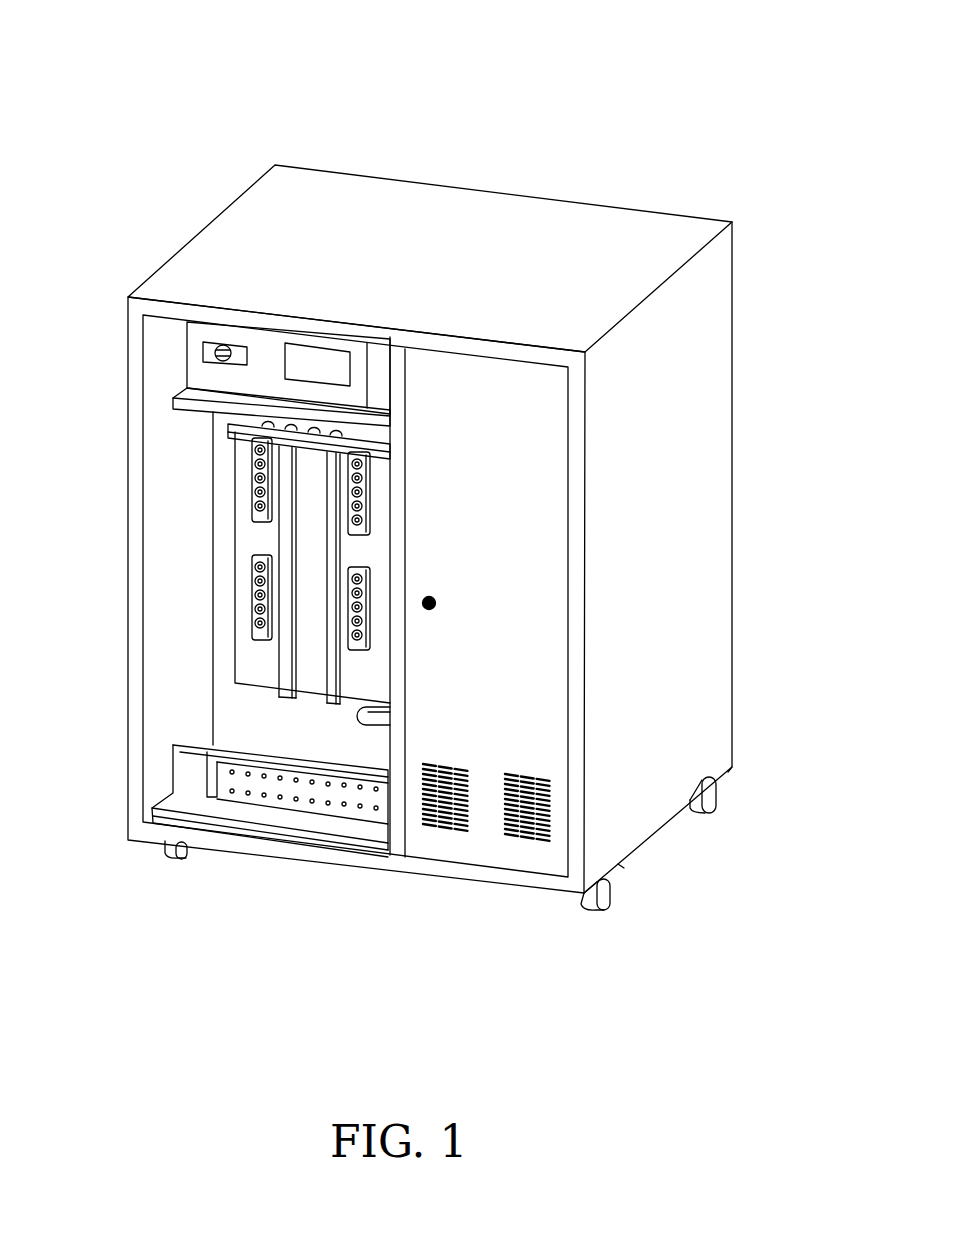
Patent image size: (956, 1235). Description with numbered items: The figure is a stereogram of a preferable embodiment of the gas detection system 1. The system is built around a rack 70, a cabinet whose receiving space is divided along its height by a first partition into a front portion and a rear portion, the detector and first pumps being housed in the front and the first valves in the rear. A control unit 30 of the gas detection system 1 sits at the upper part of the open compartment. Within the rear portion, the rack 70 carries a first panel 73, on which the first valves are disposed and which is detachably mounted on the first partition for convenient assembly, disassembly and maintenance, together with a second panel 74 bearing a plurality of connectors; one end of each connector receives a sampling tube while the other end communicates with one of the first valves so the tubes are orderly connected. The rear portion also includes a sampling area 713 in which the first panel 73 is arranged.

The gas detection system 1 is at (578, 142).
The control unit 30 is at (255, 340).
The rack 70 is at (705, 455).
The first panel 73 is at (246, 538).
The sampling area 713 is at (160, 575).
The second panel 74 is at (257, 793).